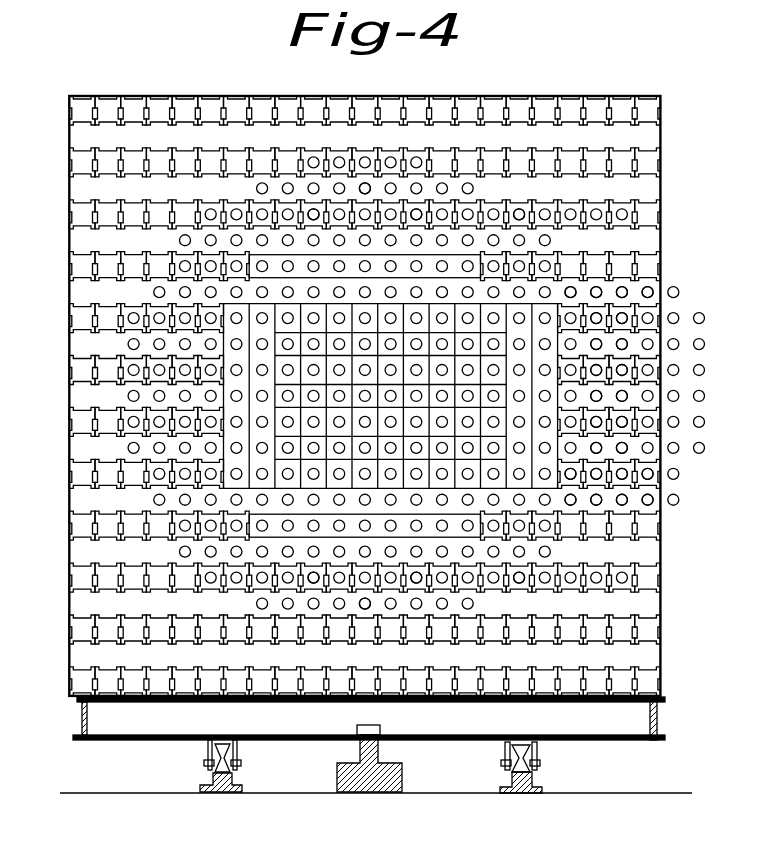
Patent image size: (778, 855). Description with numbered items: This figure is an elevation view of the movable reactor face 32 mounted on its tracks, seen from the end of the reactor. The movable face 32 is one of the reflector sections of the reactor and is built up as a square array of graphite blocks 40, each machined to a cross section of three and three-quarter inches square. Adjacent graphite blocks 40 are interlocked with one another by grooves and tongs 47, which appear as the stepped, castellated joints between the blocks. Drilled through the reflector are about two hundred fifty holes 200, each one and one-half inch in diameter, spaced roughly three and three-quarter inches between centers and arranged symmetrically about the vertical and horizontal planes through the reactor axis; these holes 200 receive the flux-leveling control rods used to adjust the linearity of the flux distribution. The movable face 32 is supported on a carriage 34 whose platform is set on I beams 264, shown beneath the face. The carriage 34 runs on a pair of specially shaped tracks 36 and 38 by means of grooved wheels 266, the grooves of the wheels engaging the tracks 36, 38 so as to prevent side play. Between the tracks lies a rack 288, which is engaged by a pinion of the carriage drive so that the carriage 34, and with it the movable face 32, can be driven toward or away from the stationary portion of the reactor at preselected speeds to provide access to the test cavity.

The movable face 32 is at (643, 96).
The grooves and tongs 47 is at (643, 143).
The graphite blocks 40 is at (660, 441).
The holes 200 is at (128, 397).
The carriage 34 is at (663, 718).
The I beams 264 is at (112, 728).
The grooved wheels 266 is at (207, 760).
The track 38 is at (233, 786).
The rack 288 is at (400, 783).
The track 36 is at (522, 793).